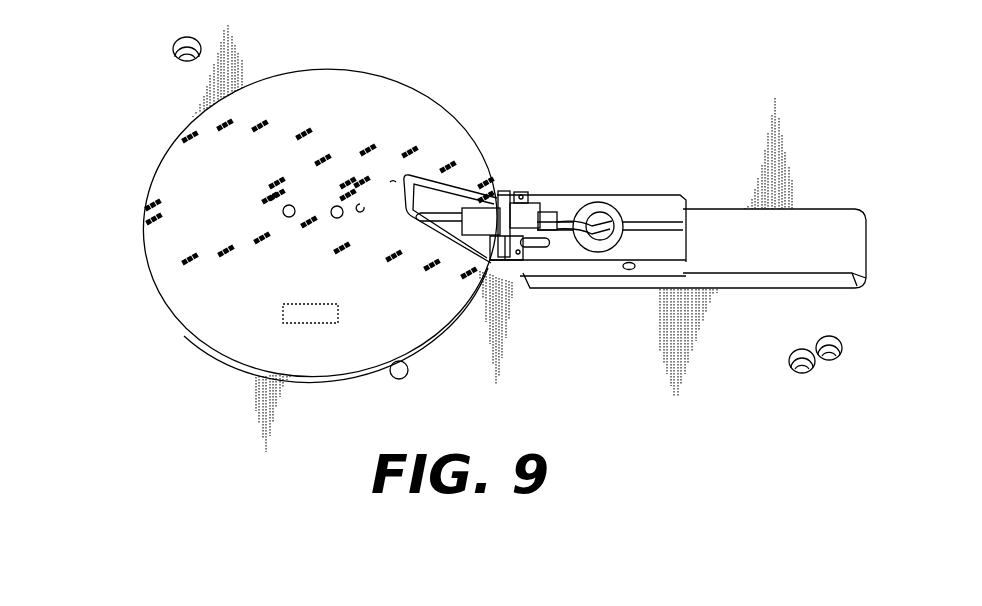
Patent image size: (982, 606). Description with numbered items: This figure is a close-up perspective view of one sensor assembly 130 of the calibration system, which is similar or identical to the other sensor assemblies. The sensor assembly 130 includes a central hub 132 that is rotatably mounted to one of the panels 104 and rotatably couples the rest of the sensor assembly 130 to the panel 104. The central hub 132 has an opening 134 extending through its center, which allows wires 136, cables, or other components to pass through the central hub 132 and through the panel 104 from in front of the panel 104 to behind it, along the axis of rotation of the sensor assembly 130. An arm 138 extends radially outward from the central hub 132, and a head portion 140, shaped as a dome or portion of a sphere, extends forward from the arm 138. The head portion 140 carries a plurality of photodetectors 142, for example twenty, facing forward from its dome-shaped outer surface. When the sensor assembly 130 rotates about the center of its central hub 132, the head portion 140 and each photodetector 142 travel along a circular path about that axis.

The panel 104 is at (642, 112).
The sensor assembly 130 is at (120, 178).
The central hub 132 is at (618, 222).
The opening 134 is at (605, 223).
The wires 136 is at (548, 215).
The arm 138 is at (557, 247).
The head portion 140 is at (351, 97).
The photodetectors 142 is at (277, 183).